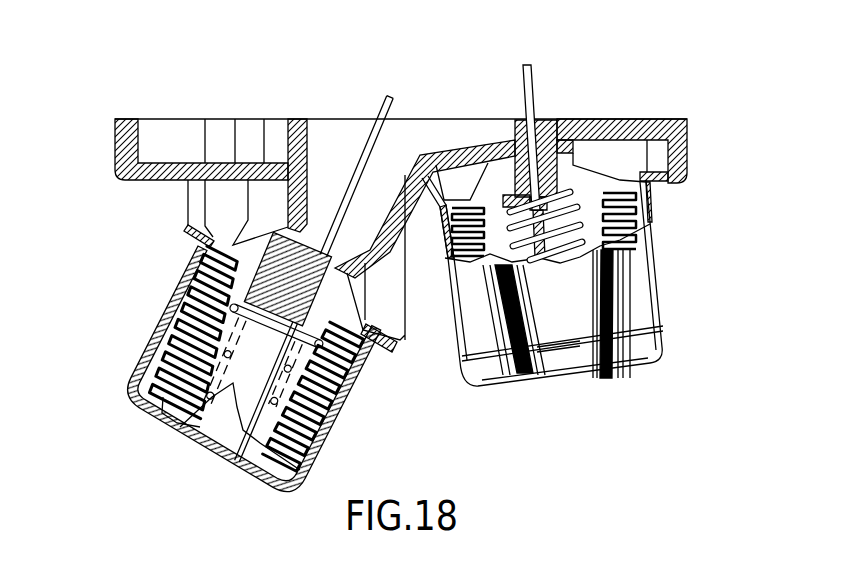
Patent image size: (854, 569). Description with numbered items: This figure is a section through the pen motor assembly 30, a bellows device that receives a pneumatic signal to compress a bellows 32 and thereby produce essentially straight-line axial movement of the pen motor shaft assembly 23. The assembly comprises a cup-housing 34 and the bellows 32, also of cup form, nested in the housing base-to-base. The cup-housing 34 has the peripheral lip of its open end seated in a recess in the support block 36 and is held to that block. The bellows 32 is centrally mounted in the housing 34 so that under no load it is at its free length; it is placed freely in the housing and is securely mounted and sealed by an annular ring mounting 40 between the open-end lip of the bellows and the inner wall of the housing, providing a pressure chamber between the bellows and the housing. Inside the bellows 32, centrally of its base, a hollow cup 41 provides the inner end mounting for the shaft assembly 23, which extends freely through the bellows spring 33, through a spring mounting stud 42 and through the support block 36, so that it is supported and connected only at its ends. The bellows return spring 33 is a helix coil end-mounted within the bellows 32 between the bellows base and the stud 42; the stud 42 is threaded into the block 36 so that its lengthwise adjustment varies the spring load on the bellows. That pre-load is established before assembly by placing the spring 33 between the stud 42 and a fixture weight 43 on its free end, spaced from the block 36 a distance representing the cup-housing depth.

The pen motor shaft assembly 23 is at (383, 100).
The pen motor assembly 30 is at (588, 375).
The bellows 32 is at (130, 373).
The bellows spring 33 is at (607, 257).
The cup-housing 34 is at (160, 420).
The support block 36 is at (115, 120).
The annular ring mounting 40 is at (196, 247).
The hollow cup 41 is at (222, 427).
The spring mounting stud 42 is at (570, 172).
The weight 43 is at (380, 348).